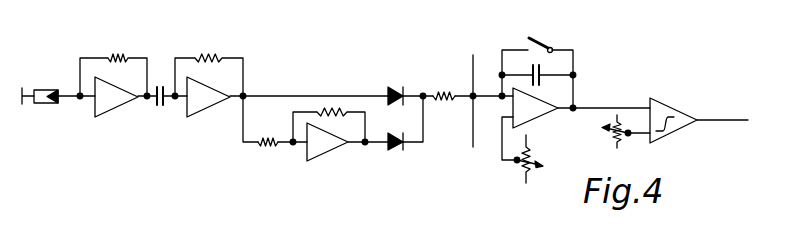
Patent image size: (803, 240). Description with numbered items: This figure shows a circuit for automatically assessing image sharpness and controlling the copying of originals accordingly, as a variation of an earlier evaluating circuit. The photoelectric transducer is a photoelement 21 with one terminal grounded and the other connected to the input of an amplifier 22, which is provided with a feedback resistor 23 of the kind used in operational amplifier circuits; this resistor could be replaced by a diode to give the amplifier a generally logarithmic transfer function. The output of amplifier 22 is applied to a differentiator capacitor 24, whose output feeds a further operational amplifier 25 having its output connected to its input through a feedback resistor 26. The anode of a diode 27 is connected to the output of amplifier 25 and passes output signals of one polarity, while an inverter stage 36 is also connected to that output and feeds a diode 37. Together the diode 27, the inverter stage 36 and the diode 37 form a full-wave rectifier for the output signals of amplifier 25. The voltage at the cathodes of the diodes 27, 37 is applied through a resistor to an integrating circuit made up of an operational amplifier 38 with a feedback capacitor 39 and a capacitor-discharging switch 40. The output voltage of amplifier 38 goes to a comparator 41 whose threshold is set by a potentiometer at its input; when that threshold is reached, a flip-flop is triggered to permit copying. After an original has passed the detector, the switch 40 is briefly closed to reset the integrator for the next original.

The photoelement 21 is at (45, 104).
The amplifier 22 is at (103, 110).
The feedback resistor 23 is at (108, 57).
The differentiator capacitor 24 is at (160, 106).
The operational amplifier 25 is at (207, 106).
The feedback resistor 26 is at (225, 56).
The diode 27 is at (396, 87).
The inverter stage 36 is at (318, 160).
The diode 37 is at (396, 151).
The operational amplifier 38 is at (537, 115).
The feedback capacitor 39 is at (545, 81).
The capacitor-discharging switch 40 is at (549, 42).
The comparator 41 is at (660, 98).